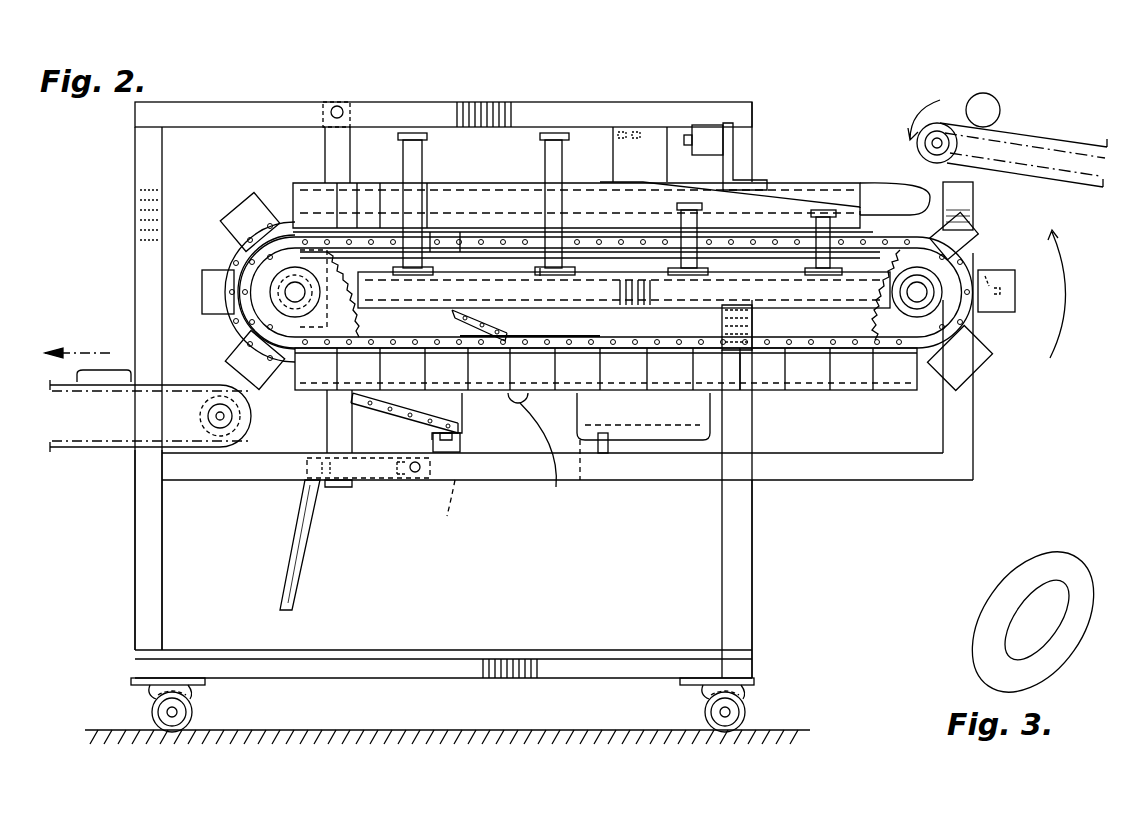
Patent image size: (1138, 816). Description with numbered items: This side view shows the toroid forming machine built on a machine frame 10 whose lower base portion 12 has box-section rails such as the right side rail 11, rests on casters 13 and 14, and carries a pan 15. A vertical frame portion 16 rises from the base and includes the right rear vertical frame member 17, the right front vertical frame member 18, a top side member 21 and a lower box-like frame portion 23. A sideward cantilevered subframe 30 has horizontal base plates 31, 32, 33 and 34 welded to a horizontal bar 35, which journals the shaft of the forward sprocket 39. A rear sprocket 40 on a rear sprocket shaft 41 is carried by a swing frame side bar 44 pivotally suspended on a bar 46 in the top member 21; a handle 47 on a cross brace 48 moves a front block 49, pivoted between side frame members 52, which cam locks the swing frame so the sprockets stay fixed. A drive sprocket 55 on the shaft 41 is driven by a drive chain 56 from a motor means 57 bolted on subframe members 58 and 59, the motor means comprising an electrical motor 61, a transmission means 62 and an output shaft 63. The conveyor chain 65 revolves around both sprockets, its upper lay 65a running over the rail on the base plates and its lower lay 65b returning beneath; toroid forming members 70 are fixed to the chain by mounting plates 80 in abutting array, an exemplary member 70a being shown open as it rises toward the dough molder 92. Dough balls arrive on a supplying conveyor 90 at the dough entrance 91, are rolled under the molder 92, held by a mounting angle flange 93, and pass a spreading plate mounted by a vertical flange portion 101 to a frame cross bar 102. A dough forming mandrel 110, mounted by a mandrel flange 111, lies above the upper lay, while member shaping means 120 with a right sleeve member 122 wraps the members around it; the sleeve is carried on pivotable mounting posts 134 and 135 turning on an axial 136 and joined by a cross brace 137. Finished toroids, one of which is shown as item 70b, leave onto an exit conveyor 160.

In FIG. 2, the machine frame 10 is at (752, 102).
In FIG. 2, the right side rail 11 is at (414, 680).
In FIG. 2, the lower base portion 12 is at (752, 654).
In FIG. 2, the caster 13 is at (148, 697).
In FIG. 2, the caster 14 is at (750, 690).
In FIG. 2, the pan 15 is at (536, 653).
In FIG. 2, the vertical frame portion 16 is at (158, 159).
In FIG. 2, the right rear vertical frame member 17 is at (158, 548).
In FIG. 2, the right front vertical frame member 18 is at (754, 544).
In FIG. 2, the right side member 21 is at (230, 102).
In FIG. 2, the lower box-like frame portion 23 is at (220, 480).
In FIG. 2, the sideward cantilevered subframe 30 is at (526, 352).
In FIG. 2, the horizontal base plate 31 is at (412, 272).
In FIG. 2, the horizontal base plate 32 is at (556, 272).
In FIG. 2, the horizontal base plate 33 is at (696, 272).
In FIG. 2, the horizontal base plate 34 is at (822, 276).
In FIG. 2, the horizontal bar 35 is at (722, 305).
In FIG. 2, the forward sprocket 39 is at (909, 332).
In FIG. 2, the rear sprocket 40 is at (240, 309).
In FIG. 2, the rear sprocket shaft 41 is at (292, 289).
In FIG. 2, the swing frame side bar 44 is at (322, 137).
In FIG. 2, the bar 46 is at (336, 106).
In FIG. 2, the handle 47 is at (286, 600).
In FIG. 2, the cross brace 48 is at (372, 478).
In FIG. 2, the front block 49 is at (418, 448).
In FIG. 2, the side frame member 52 is at (270, 452).
In FIG. 2, the drive sprocket 55 is at (380, 312).
In FIG. 2, the drive chain 56 is at (368, 387).
In FIG. 2, the motor means 57 is at (586, 426).
In FIG. 2, the subframe member 58 is at (436, 513).
In FIG. 2, the subframe member 59 is at (606, 480).
In FIG. 2, the electrical motor 61 is at (700, 437).
In FIG. 2, the transmission means 62 is at (486, 440).
In FIG. 2, the output shaft 63 is at (543, 455).
In FIG. 2, the conveyor chain 65 is at (282, 208).
In FIG. 2, the upper lay 65a is at (504, 250).
In FIG. 2, the lower lay 65b is at (626, 332).
In FIG. 2, the toroid forming member 70 is at (854, 372).
In FIG. 2, the dough forming member 70a is at (994, 312).
In FIG. 3, the ring workpiece 70b is at (1032, 621).
In FIG. 2, the mounting plate 80 is at (794, 360).
In FIG. 2, the dough ball supplying conveyor 90 is at (1028, 119).
In FIG. 2, the dough entrance 91 is at (870, 168).
In FIG. 2, the dough molder 92 is at (854, 187).
In FIG. 2, the mounting angle flange 93 is at (730, 163).
In FIG. 2, the vertical flange portion 101 is at (952, 200).
In FIG. 2, the frame cross bar 102 is at (970, 196).
In FIG. 2, the dough forming mandrel 110 is at (449, 180).
In FIG. 2, the mandrel flange 111 is at (646, 134).
In FIG. 2, the member shaping means 120 is at (632, 160).
In FIG. 2, the right sleeve member 122 is at (578, 181).
In FIG. 2, the mounting post 134 is at (403, 154).
In FIG. 2, the mounting post 135 is at (540, 146).
In FIG. 2, the axial 136 is at (470, 200).
In FIG. 2, the cross brace 137 is at (430, 184).
In FIG. 2, the exit conveyor 160 is at (105, 329).